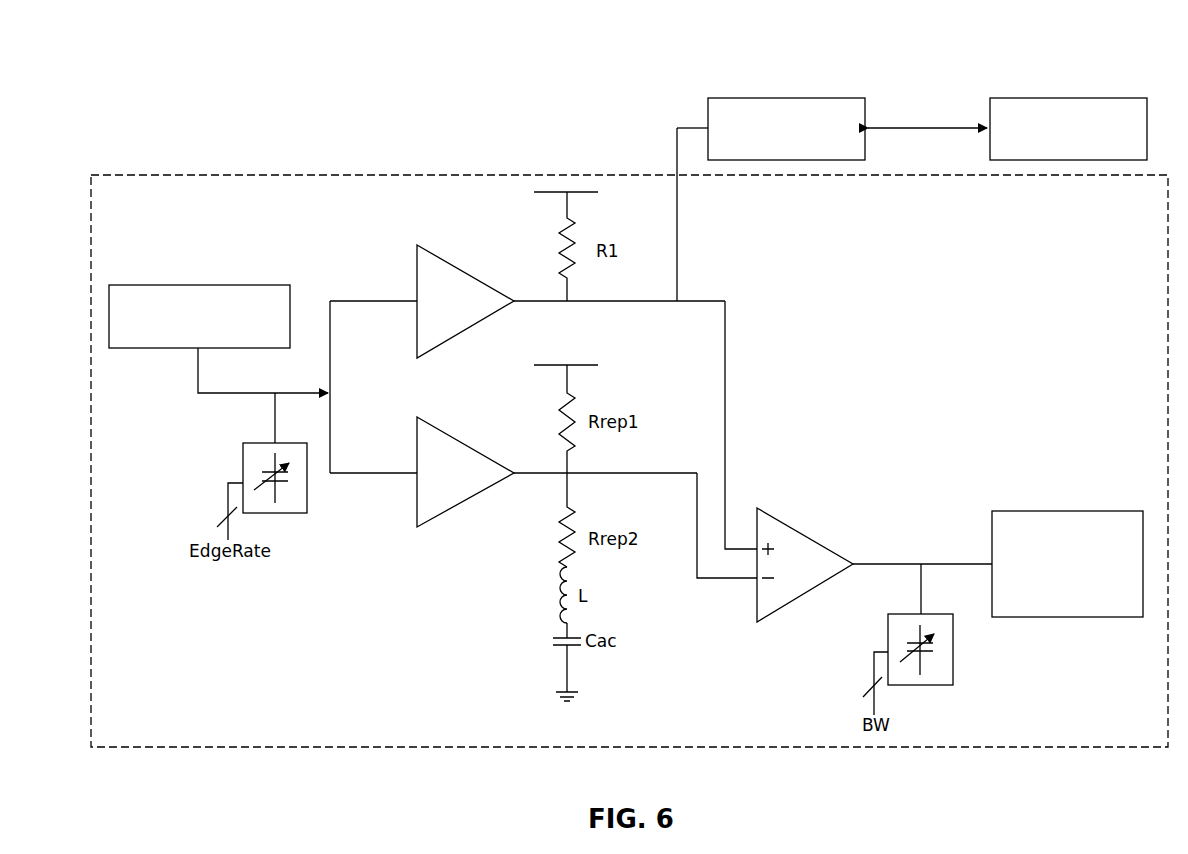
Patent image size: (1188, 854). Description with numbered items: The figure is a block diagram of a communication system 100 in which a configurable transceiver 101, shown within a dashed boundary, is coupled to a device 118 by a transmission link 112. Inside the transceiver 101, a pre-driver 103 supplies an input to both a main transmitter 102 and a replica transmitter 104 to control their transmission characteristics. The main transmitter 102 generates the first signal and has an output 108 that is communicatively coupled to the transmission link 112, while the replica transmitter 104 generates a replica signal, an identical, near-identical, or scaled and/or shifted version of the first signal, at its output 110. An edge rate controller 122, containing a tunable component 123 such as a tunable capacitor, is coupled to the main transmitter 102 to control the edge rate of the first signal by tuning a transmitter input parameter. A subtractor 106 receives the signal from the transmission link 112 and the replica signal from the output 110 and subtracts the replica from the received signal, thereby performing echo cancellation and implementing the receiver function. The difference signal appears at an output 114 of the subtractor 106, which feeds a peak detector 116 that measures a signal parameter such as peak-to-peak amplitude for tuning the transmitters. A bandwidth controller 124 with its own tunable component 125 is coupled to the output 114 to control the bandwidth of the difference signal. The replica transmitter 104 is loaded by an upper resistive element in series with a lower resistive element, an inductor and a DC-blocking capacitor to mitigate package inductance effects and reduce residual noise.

The communication system 100 is at (175, 77).
The configurable transceiver 101 is at (147, 175).
The main transmitter 102 is at (445, 257).
The pre-driver 103 is at (252, 285).
The replica transmitter 104 is at (443, 428).
The subtractor 106 is at (812, 538).
The output of the main transmitter 108 is at (520, 302).
The output of the replica transmitter 110 is at (514, 480).
The transmission link 112 is at (835, 98).
The output of the subtractor 114 is at (860, 561).
The peak detector 116 is at (1060, 511).
The device 118 is at (1085, 98).
The edge rate controller 122 is at (266, 462).
The tunable component 123 is at (280, 487).
The bandwidth controller 124 is at (906, 647).
The tunable component 125 is at (926, 656).